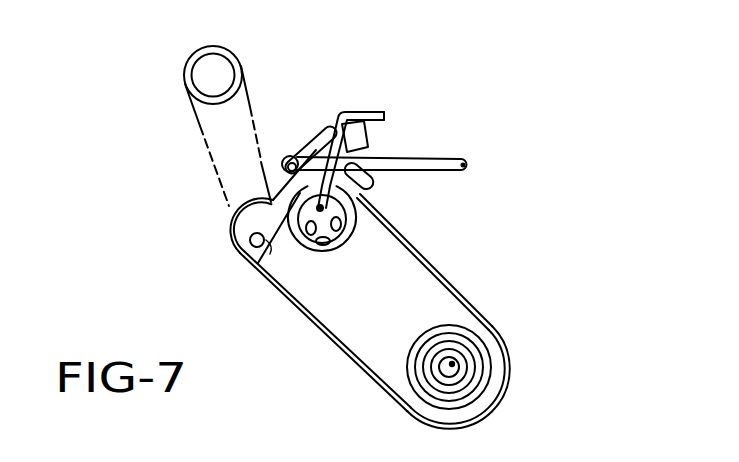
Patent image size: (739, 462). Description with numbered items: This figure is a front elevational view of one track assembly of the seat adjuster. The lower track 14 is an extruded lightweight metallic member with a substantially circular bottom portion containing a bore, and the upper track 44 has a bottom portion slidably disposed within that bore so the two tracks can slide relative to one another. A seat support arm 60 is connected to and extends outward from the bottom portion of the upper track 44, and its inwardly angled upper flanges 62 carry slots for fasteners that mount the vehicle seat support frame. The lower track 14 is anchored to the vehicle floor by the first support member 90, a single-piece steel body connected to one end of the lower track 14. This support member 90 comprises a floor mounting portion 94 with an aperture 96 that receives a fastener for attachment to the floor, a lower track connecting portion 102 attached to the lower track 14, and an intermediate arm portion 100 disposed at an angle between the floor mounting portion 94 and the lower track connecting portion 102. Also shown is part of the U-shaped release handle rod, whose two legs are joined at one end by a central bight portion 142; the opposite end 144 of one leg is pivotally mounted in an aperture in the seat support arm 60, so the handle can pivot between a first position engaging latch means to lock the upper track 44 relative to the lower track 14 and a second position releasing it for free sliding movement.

The lower track 14 is at (372, 200).
The upper track 44 is at (332, 248).
The seat support arm 60 is at (334, 128).
The upper flanges 62 is at (367, 113).
The first support member 90 is at (432, 252).
The floor mounting portion 94 is at (478, 316).
The aperture 96 is at (452, 367).
The intermediate arm portion 100 is at (317, 297).
The lower track connecting portion 102 is at (250, 257).
The central bight portion 142 is at (465, 161).
The end of leg 144 is at (367, 132).